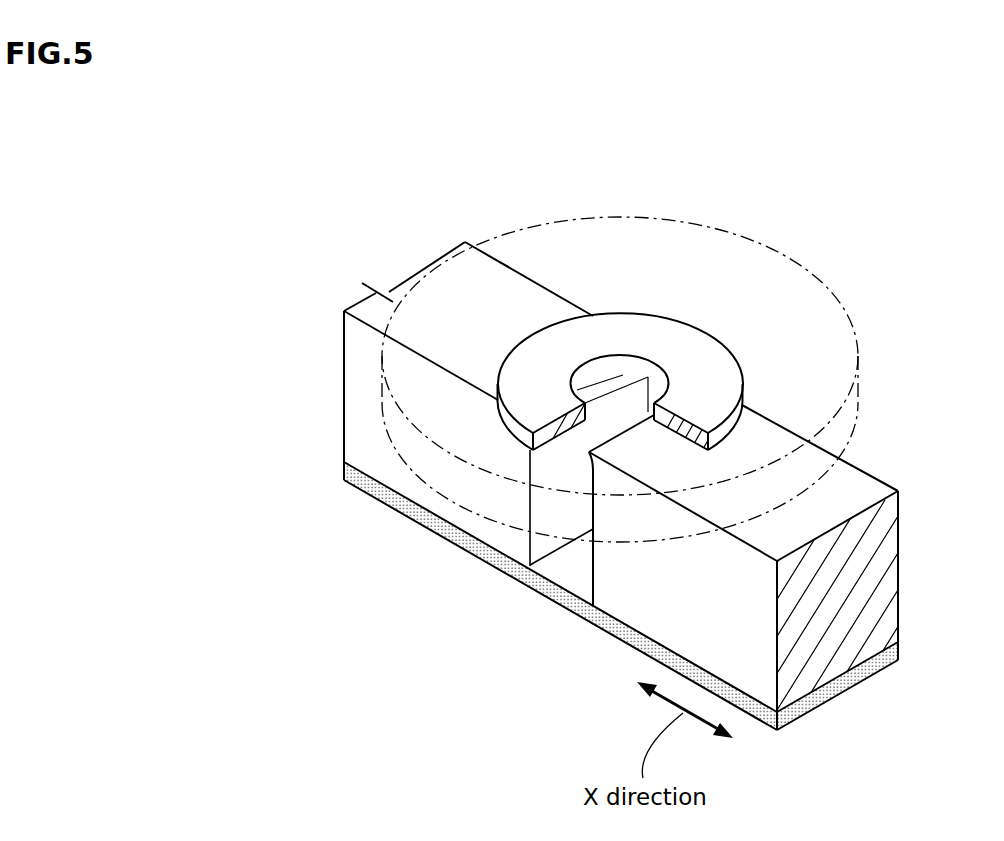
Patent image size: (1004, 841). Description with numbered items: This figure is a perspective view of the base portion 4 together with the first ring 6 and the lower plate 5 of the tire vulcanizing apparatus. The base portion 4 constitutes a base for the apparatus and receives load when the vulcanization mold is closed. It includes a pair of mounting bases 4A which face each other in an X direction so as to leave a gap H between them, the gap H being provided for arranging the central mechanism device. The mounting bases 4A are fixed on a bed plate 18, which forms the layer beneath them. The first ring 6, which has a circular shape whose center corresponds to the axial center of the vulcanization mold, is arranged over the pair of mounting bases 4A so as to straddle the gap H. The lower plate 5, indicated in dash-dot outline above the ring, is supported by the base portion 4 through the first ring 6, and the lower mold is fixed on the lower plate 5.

The base portion 4 is at (674, 521).
The mounting bases 4A is at (428, 490).
The lower plate 5 is at (859, 338).
The first ring 6 is at (710, 333).
The gap H is at (565, 563).
The bed plate 18 is at (840, 683).